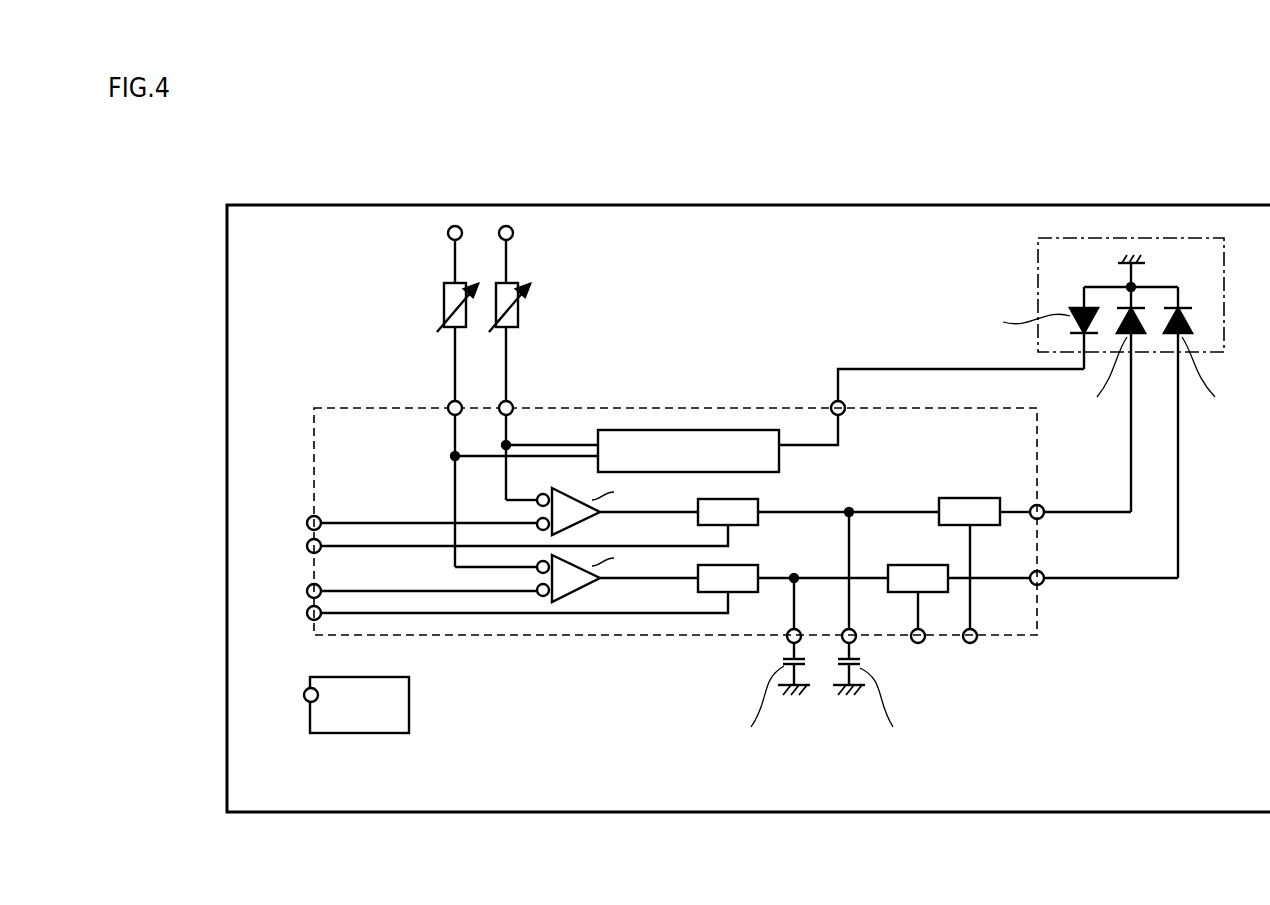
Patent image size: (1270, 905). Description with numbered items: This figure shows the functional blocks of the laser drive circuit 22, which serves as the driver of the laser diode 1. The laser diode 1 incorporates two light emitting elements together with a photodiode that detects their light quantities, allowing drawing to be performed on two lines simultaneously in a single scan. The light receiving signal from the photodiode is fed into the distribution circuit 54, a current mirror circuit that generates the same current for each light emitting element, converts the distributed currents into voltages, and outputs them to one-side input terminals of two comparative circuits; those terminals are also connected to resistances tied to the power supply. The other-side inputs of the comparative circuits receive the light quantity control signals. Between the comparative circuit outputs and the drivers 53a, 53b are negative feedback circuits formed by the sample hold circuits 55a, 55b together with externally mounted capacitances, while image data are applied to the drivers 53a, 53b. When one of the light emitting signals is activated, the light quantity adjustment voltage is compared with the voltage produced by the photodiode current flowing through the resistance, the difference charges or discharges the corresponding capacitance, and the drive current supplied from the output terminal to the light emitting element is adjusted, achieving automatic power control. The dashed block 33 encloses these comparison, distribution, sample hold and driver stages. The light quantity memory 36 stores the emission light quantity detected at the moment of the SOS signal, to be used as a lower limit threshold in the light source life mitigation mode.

The laser drive circuit 22 is at (963, 205).
The laser diode 1 is at (1038, 264).
The laser driving circuit 33 is at (337, 408).
The distribution circuit 54 is at (779, 465).
The sample hold circuit 55a is at (750, 526).
The sample hold circuit 55b is at (740, 593).
The driver 53a is at (968, 498).
The driver 53b is at (914, 565).
The light quantity memory 36 is at (411, 706).